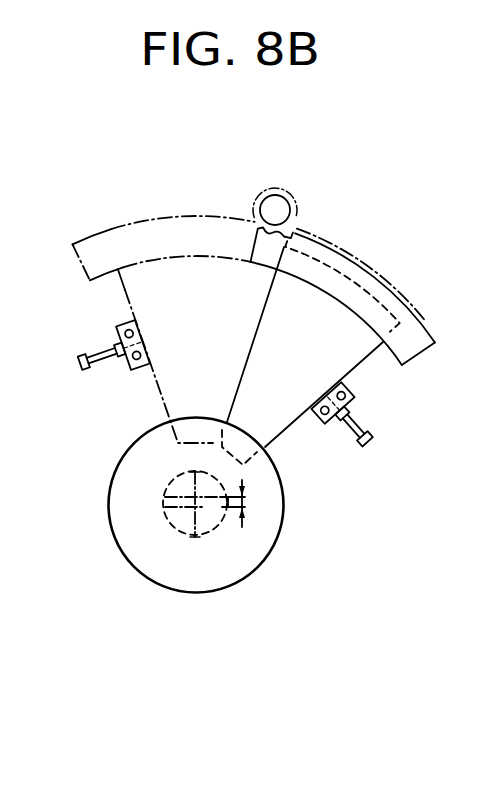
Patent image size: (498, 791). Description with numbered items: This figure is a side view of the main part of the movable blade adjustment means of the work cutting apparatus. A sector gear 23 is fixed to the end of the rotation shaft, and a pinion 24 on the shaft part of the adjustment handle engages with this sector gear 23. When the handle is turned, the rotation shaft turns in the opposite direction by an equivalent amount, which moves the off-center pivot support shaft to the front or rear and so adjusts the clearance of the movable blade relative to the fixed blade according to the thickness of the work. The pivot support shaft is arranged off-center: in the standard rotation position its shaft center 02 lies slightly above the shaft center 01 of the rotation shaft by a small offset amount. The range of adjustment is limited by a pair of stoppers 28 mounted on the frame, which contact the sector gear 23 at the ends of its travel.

The sector gear 23 is at (410, 347).
The pinion 24 is at (273, 200).
The stoppers 28 is at (100, 350).
The shaft center of the pivot support shaft 02 is at (195, 497).
The shaft center of the rotation shaft 01 is at (195, 507).